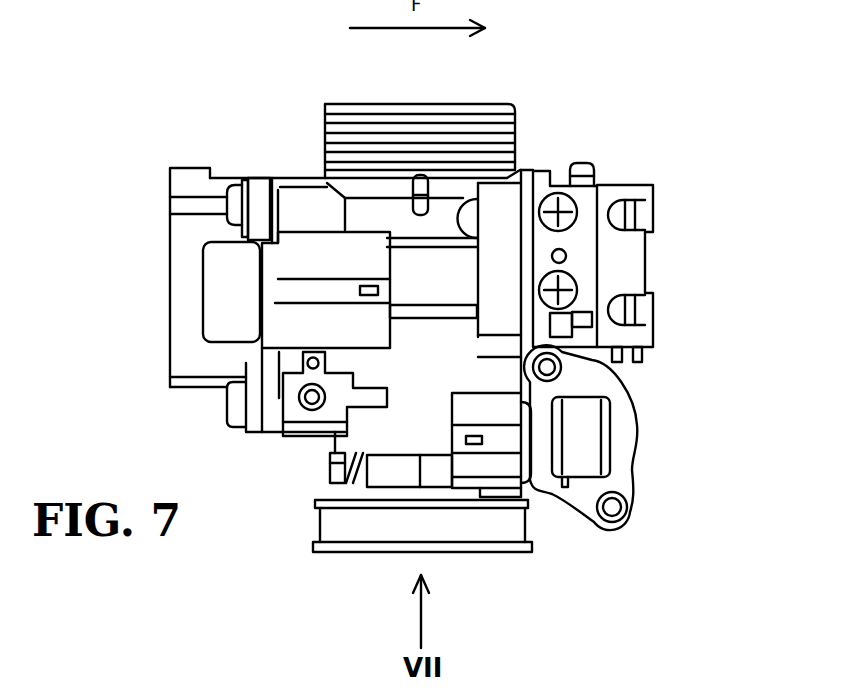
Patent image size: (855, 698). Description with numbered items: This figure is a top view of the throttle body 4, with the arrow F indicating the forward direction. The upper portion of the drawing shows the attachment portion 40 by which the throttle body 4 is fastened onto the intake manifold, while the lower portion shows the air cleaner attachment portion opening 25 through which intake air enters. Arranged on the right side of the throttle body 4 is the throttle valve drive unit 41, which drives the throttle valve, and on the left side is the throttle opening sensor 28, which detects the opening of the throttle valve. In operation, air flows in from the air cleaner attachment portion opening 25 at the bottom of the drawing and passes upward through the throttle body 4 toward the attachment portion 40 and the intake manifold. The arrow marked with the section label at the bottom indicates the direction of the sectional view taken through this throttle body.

The throttle body 4 is at (143, 100).
The air cleaner attachment portion opening 25 is at (495, 552).
The throttle opening sensor 28 is at (182, 248).
The attachment portion 40 is at (482, 107).
The throttle valve drive unit 41 is at (668, 213).